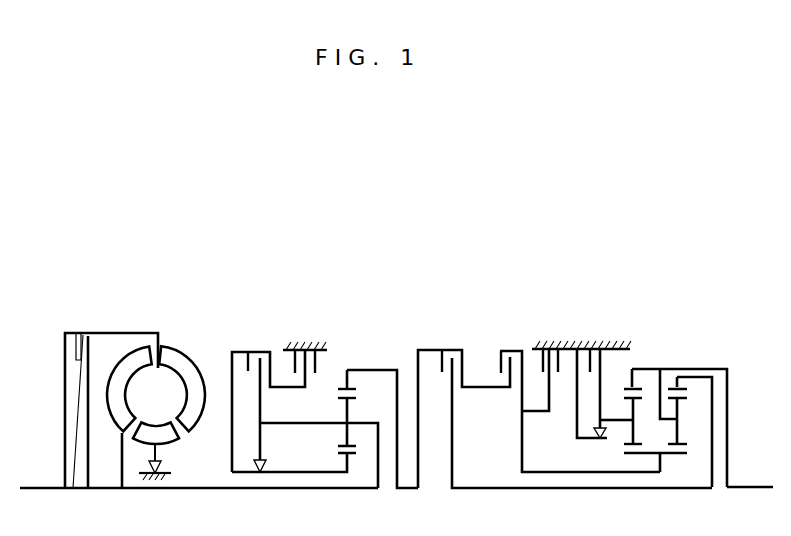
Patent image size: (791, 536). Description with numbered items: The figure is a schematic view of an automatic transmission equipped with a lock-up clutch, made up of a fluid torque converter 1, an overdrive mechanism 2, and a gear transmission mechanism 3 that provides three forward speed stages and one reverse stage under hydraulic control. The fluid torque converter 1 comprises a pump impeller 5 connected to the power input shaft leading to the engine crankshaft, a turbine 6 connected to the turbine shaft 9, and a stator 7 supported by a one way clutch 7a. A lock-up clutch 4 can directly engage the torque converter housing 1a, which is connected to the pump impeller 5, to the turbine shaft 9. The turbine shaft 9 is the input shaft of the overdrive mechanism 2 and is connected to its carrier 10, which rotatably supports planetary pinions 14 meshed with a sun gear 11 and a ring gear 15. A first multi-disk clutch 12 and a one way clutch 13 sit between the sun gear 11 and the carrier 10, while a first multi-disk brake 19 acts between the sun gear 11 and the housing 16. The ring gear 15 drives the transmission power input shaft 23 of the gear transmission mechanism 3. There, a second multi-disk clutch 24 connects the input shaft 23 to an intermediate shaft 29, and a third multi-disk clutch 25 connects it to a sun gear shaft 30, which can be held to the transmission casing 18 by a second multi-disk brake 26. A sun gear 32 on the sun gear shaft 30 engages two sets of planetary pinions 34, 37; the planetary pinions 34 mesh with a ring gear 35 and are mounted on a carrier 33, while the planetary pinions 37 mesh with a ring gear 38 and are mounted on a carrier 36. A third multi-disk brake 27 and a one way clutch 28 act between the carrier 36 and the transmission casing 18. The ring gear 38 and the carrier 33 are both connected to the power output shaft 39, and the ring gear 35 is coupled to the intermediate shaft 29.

The fluid torque converter 1 is at (141, 325).
The torque converter housing 1a is at (79, 334).
The lock-up clutch 4 is at (91, 340).
The pump impeller 5 is at (192, 366).
The turbine 6 is at (128, 363).
The stator 7 is at (176, 448).
The one way clutch 7a is at (139, 474).
The turbine shaft 9 is at (193, 490).
The overdrive mechanism 2 is at (324, 329).
The first multi-disk clutch 12 is at (261, 351).
The housing 16 is at (306, 343).
The first multi-disk brake 19 is at (318, 360).
The one way clutch 13 is at (256, 460).
The ring gear 15 is at (341, 389).
The planetary pinions 14 is at (342, 399).
The sun gear 11 is at (340, 450).
The carrier 10 is at (372, 422).
The transmission power input shaft 23 is at (407, 490).
The gear transmission mechanism 3 is at (605, 330).
The second multi-disk clutch 24 is at (450, 350).
The third multi-disk clutch 25 is at (507, 350).
The second multi-disk brake 26 is at (559, 362).
The transmission casing 18 is at (545, 345).
The third multi-disk brake 27 is at (616, 347).
The one way clutch 28 is at (577, 437).
The intermediate shaft 29 is at (502, 490).
The sun gear shaft 30 is at (534, 470).
The carrier 36 is at (600, 396).
The planetary pinions 37 is at (630, 435).
The ring gear 38 is at (640, 387).
The sun gear 32 is at (668, 455).
The carrier 33 is at (677, 377).
The planetary pinions 34 is at (688, 400).
The ring gear 35 is at (706, 368).
The power output shaft 39 is at (737, 489).